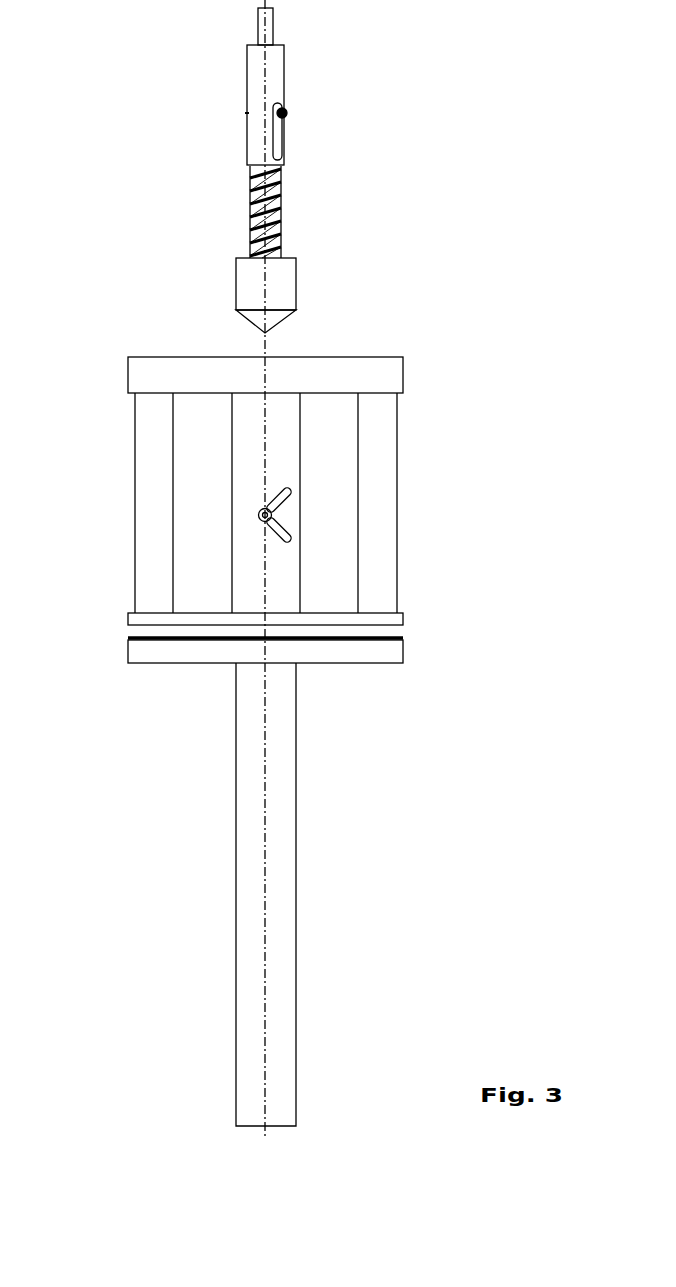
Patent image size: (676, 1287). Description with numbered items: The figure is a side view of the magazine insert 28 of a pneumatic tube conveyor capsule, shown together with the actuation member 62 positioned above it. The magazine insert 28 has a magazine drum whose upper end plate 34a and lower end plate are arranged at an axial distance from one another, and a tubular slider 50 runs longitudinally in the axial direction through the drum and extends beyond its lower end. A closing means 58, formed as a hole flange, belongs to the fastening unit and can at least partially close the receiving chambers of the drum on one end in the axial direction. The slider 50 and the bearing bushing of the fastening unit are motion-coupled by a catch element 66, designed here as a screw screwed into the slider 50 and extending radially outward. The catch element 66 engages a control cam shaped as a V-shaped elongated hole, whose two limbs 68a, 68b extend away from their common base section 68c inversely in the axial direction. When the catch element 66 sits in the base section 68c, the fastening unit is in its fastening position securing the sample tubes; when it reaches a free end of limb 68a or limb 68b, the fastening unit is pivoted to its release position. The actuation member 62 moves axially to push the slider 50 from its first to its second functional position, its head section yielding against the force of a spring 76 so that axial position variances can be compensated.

The magazine insert 28 is at (440, 274).
The upper end plate 34a is at (388, 376).
The slider 50 is at (250, 703).
The closing means 58 is at (160, 634).
The actuation member 62 is at (191, 171).
The catch element 66 is at (258, 512).
The limb of the control cam 68a is at (288, 498).
The limb of the control cam 68b is at (300, 538).
The base section of the control cam 68c is at (258, 517).
The spring 76 is at (280, 213).